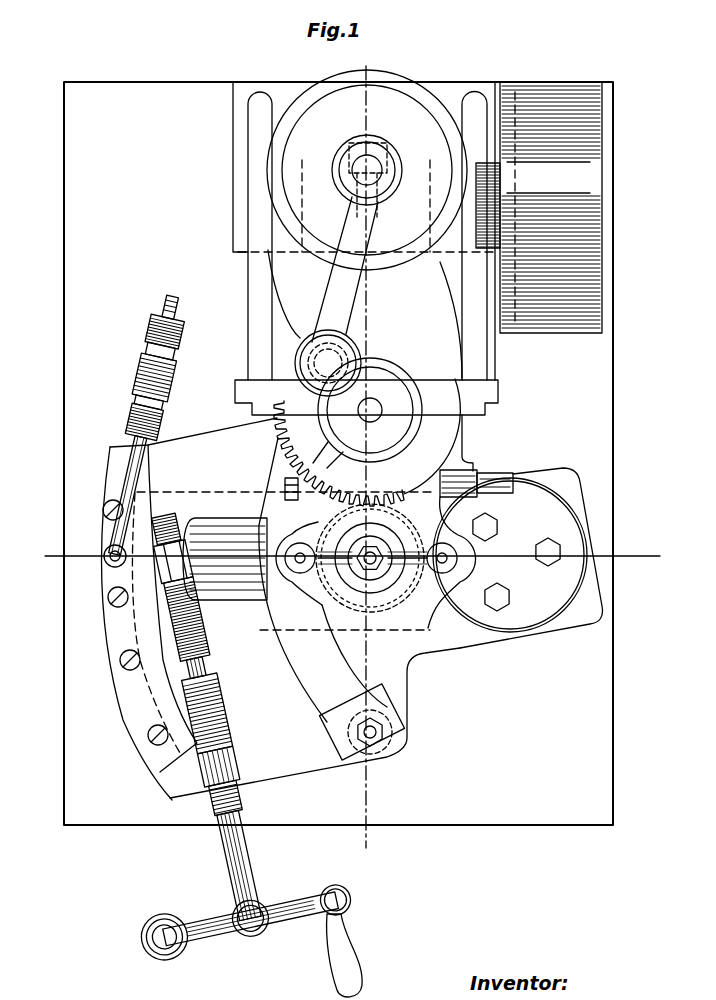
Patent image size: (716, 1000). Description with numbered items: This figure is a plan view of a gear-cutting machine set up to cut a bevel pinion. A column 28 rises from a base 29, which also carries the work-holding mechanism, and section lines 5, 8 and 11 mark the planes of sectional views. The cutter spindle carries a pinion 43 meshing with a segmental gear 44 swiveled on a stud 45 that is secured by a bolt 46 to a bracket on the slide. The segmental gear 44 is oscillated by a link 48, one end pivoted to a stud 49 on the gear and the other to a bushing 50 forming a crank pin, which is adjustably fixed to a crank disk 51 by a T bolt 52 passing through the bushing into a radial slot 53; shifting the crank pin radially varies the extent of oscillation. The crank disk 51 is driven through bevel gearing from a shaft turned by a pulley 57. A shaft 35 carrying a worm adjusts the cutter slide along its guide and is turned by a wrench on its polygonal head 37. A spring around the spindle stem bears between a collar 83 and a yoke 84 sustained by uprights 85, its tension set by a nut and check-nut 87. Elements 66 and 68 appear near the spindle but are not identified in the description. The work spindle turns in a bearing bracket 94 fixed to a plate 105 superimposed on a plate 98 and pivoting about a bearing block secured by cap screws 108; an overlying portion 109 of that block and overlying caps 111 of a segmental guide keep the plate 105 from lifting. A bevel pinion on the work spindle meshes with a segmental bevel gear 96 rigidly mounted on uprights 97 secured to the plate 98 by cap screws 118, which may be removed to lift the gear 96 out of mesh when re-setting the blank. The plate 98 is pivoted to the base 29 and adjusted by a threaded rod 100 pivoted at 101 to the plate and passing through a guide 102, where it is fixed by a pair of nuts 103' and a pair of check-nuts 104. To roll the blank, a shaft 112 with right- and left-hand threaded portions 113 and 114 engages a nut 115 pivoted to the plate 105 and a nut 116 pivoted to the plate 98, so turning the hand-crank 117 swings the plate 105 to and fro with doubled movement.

The section line 5- 5 is at (347, 546).
The section line 8- 8 is at (366, 456).
The adjusting lever 11 is at (148, 408).
The column 28 is at (498, 393).
The base 29 is at (605, 716).
The shaft 35 is at (285, 485).
The polygonal head 37 is at (490, 470).
The pinion 43 is at (372, 612).
The segmental gear 44 is at (330, 468).
The bearing or stud 45 is at (385, 380).
The bolt 46 is at (372, 413).
The link 48 is at (345, 232).
The stud 49 is at (345, 350).
The bushing 50 is at (342, 172).
The crank disk 51 is at (410, 140).
The T bolt 52 is at (374, 163).
The radial slot 53 is at (372, 212).
The pulley 57 is at (555, 333).
The gear wheel 66 is at (338, 598).
The collar 68 is at (362, 590).
The collar 83 is at (350, 545).
The supporting yoke 84 is at (330, 570).
The uprights 85 is at (292, 568).
The check-nut 87 is at (380, 550).
The bearing bracket 94 is at (232, 528).
The segmental bevel gear 96 is at (316, 682).
The uprights 97 is at (390, 704).
The plate 98 is at (206, 438).
The threaded rod 100 is at (170, 307).
The pivot 101 is at (104, 562).
The guide 102 is at (154, 377).
The nuts 103' is at (154, 376).
The check-nuts 104 is at (154, 377).
The plate 105 is at (430, 618).
The cap screws 108 is at (488, 520).
The overlying portion 109 is at (520, 490).
The overlying caps 111 is at (106, 495).
The shaft 112 is at (196, 668).
The right-hand threaded portion 113 is at (187, 619).
The left-hand threaded portion 114 is at (207, 713).
The nut 115 is at (173, 562).
The nut 116 is at (218, 766).
The hand-crank 117 is at (335, 952).
The cap screws 118 is at (392, 742).